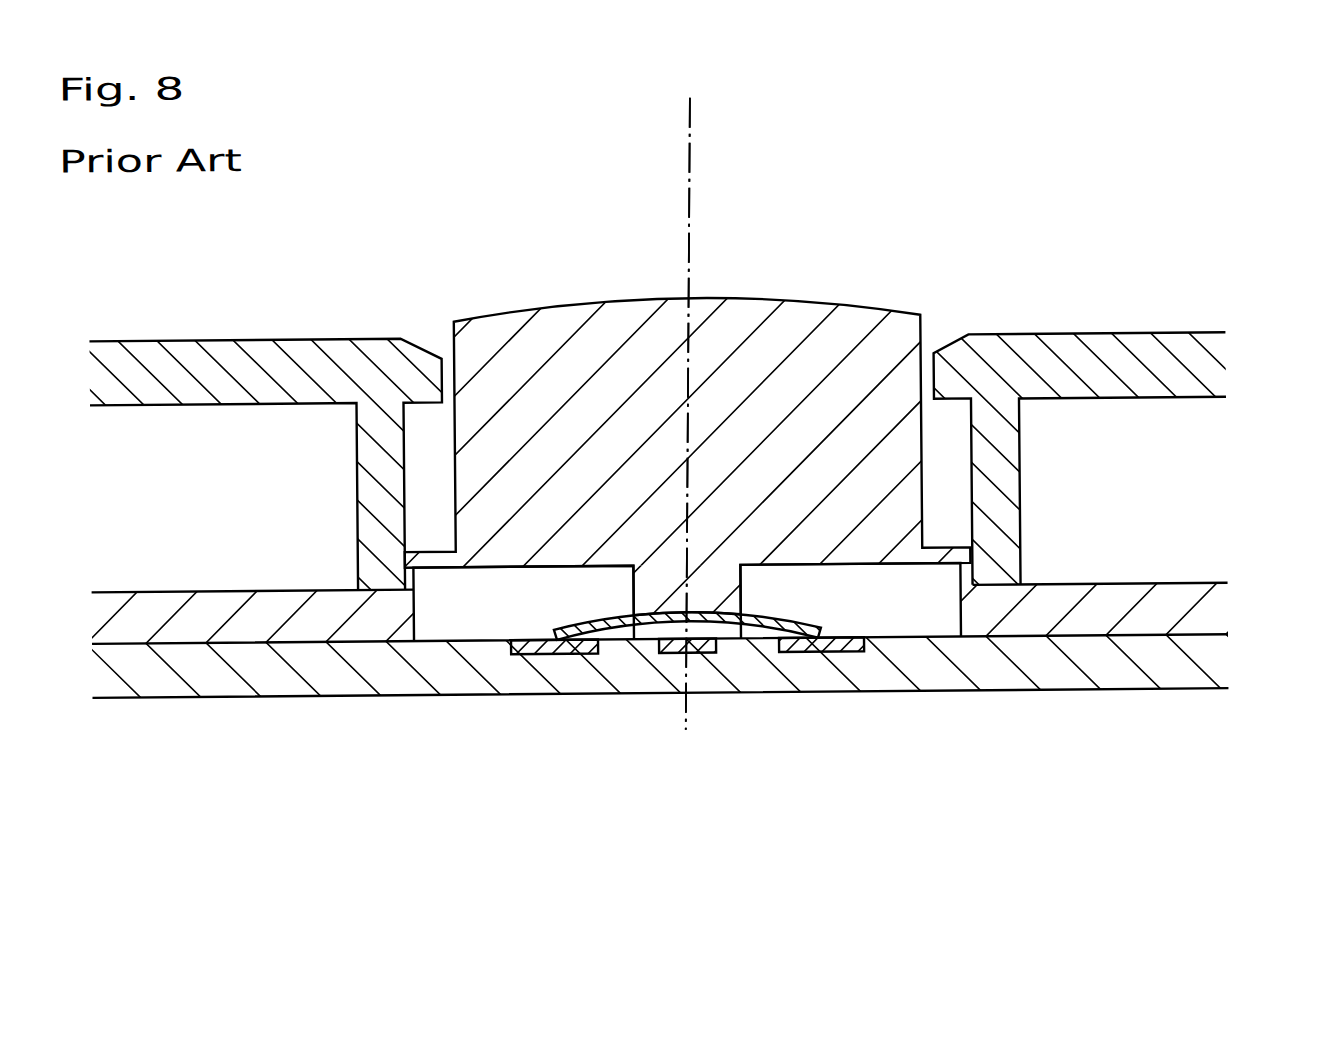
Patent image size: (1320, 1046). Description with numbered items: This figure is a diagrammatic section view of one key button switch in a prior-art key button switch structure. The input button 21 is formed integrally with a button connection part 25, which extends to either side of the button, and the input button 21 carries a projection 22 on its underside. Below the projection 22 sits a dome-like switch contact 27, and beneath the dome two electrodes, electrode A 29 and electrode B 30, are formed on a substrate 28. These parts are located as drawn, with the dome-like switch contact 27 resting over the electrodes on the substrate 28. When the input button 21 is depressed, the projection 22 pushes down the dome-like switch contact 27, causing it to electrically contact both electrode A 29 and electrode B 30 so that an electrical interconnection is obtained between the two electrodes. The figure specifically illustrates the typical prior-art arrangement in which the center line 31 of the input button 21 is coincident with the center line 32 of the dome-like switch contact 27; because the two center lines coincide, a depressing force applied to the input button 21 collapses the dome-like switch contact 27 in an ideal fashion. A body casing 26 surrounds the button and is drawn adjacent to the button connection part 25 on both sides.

The input button 21 is at (788, 324).
The projection 22 is at (681, 612).
The button connection part 25 is at (1182, 531).
The body casing 26 is at (1150, 337).
The dome-like switch contact 27 is at (553, 627).
The substrate 28 is at (197, 693).
The electrode A 29 is at (556, 653).
The electrode B 30 is at (661, 655).
The center line of the input button 31 is at (694, 103).
The center line of the dome-like switch contact 32 is at (692, 130).